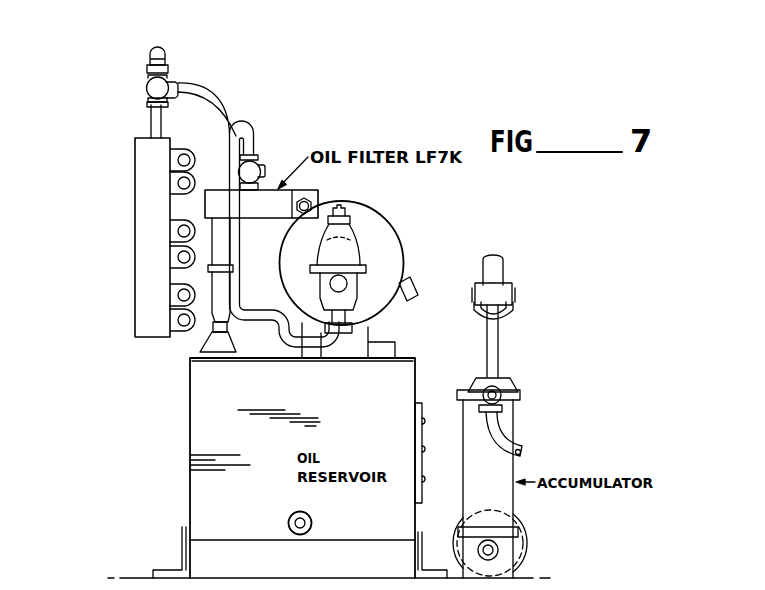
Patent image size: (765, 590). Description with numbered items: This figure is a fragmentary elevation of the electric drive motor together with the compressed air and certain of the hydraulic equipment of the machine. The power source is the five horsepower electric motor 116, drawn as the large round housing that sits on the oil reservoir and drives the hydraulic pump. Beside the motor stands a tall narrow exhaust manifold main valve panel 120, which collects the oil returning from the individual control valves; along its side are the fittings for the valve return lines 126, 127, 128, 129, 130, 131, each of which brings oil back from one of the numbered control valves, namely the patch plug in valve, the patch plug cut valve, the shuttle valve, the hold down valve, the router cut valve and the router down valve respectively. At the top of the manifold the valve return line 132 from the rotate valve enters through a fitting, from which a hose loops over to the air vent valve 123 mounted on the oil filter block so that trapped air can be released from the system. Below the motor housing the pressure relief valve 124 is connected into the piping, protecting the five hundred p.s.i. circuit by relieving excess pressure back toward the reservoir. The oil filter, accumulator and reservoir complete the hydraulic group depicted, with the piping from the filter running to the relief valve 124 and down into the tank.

The electric motor 116 is at (400, 222).
The exhaust manifold main valve panel 120 is at (148, 222).
The air vent valve 123 is at (260, 153).
The pressure relief valve 124 is at (348, 228).
The valve return line 126 is at (192, 152).
The valve return line 127 is at (196, 184).
The valve return line 128 is at (172, 237).
The valve return line 129 is at (172, 261).
The valve return line 130 is at (172, 300).
The valve return line 131 is at (172, 325).
The valve return line 132 is at (157, 47).